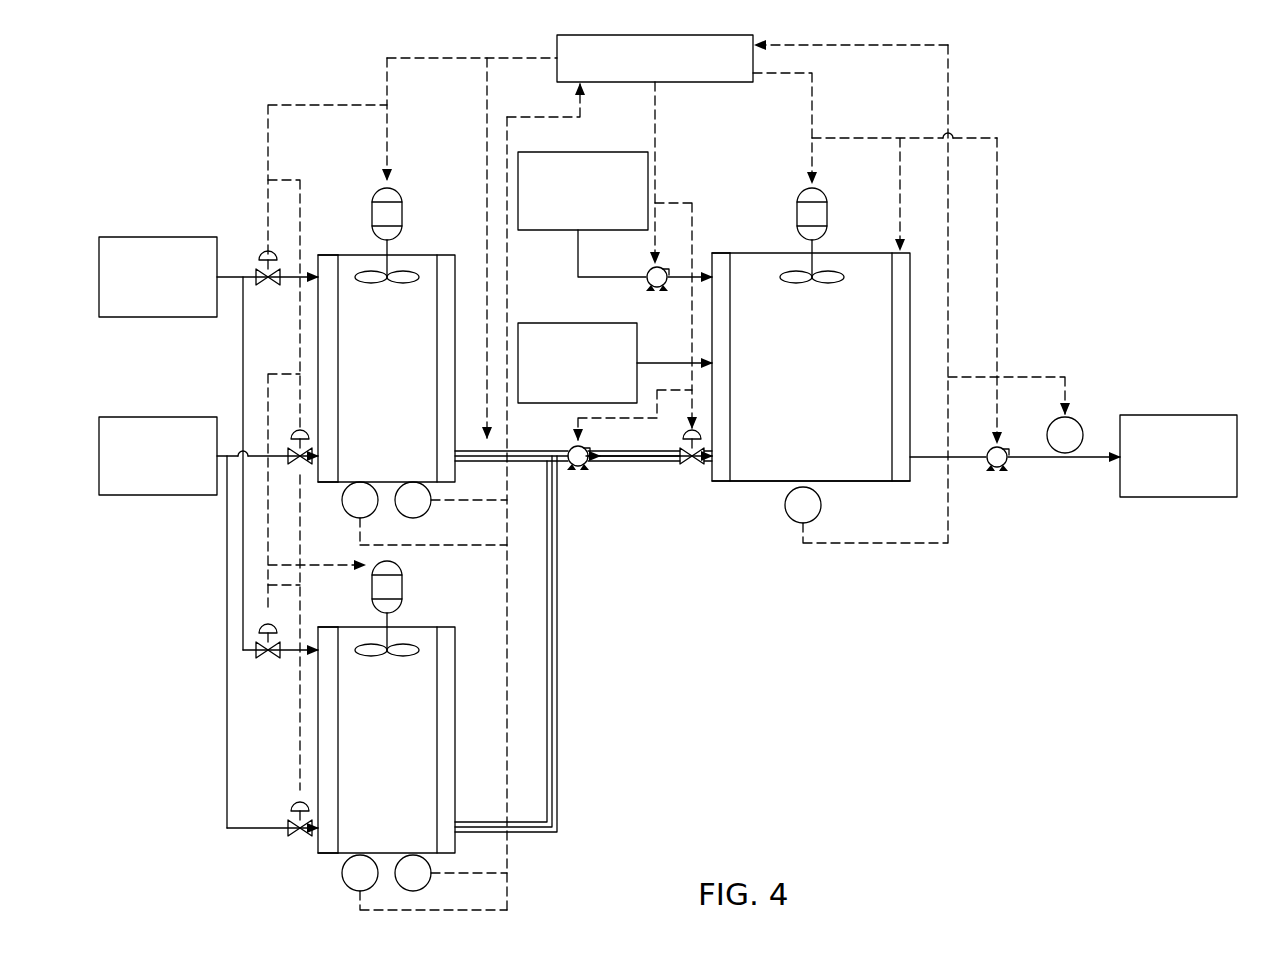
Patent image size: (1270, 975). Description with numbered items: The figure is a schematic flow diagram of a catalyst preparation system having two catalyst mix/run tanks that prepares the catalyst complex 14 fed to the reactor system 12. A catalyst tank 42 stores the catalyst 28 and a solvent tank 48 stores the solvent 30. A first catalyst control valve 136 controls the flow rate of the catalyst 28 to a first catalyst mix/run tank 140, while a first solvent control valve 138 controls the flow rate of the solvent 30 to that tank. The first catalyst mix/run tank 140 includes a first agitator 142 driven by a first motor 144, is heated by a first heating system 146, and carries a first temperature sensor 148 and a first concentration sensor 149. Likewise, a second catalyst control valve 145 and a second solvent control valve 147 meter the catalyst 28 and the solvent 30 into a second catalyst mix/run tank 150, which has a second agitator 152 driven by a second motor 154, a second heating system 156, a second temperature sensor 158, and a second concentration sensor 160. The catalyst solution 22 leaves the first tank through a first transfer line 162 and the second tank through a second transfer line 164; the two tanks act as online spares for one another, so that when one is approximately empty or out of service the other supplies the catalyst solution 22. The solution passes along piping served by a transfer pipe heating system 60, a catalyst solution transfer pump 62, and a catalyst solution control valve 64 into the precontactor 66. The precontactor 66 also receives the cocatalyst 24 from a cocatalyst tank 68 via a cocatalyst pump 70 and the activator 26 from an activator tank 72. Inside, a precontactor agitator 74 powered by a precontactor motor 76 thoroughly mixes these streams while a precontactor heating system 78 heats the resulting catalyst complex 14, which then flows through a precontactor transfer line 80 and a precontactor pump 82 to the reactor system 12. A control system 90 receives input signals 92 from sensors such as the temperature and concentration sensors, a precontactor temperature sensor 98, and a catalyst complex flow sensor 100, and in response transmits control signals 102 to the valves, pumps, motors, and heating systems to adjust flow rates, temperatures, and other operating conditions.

The reactor system 12 is at (1185, 415).
The catalyst complex 14 is at (732, 483).
The catalyst solution 22 is at (328, 485).
The cocatalyst 24 is at (568, 230).
The activator 26 is at (562, 403).
The catalyst 28 is at (155, 317).
The solvent 30 is at (160, 495).
The catalyst tank 42 is at (120, 237).
The solvent tank 48 is at (158, 417).
The transfer pipe heating system 60 is at (542, 470).
The catalyst solution transfer pump 62 is at (580, 472).
The catalyst solution control valve 64 is at (683, 446).
The precontactor 66 is at (832, 253).
The cocatalyst tank 68 is at (585, 152).
The cocatalyst pump 70 is at (650, 280).
The activator tank 72 is at (552, 323).
The precontactor agitator 74 is at (800, 284).
The precontactor motor 76 is at (802, 196).
The precontactor heating system 78 is at (714, 255).
The precontactor transfer line 80 is at (938, 457).
The precontactor pump 82 is at (1005, 472).
The control system 90 is at (652, 35).
The input signals 92 is at (562, 117).
The precontactor temperature sensor 98 is at (790, 516).
The catalyst complex flow sensor 100 is at (1075, 420).
The control signals 102 is at (518, 58).
The first catalyst control valve 136 is at (262, 256).
The first solvent control valve 138 is at (294, 436).
The first catalyst mix/run tank 140 is at (418, 255).
The first agitator 142 is at (378, 284).
The first motor 144 is at (375, 196).
The second catalyst control valve 145 is at (262, 630).
The first heating system 146 is at (318, 256).
The second solvent control valve 147 is at (293, 808).
The first temperature sensor 148 is at (428, 512).
The first concentration sensor 149 is at (356, 520).
The second catalyst mix/run tank 150 is at (418, 627).
The second agitator 152 is at (376, 657).
The second motor 154 is at (402, 590).
The second heating system 156 is at (318, 628).
The second temperature sensor 158 is at (427, 884).
The second concentration sensor 160 is at (356, 892).
The first transfer line 162 is at (512, 463).
The second transfer line 164 is at (557, 612).